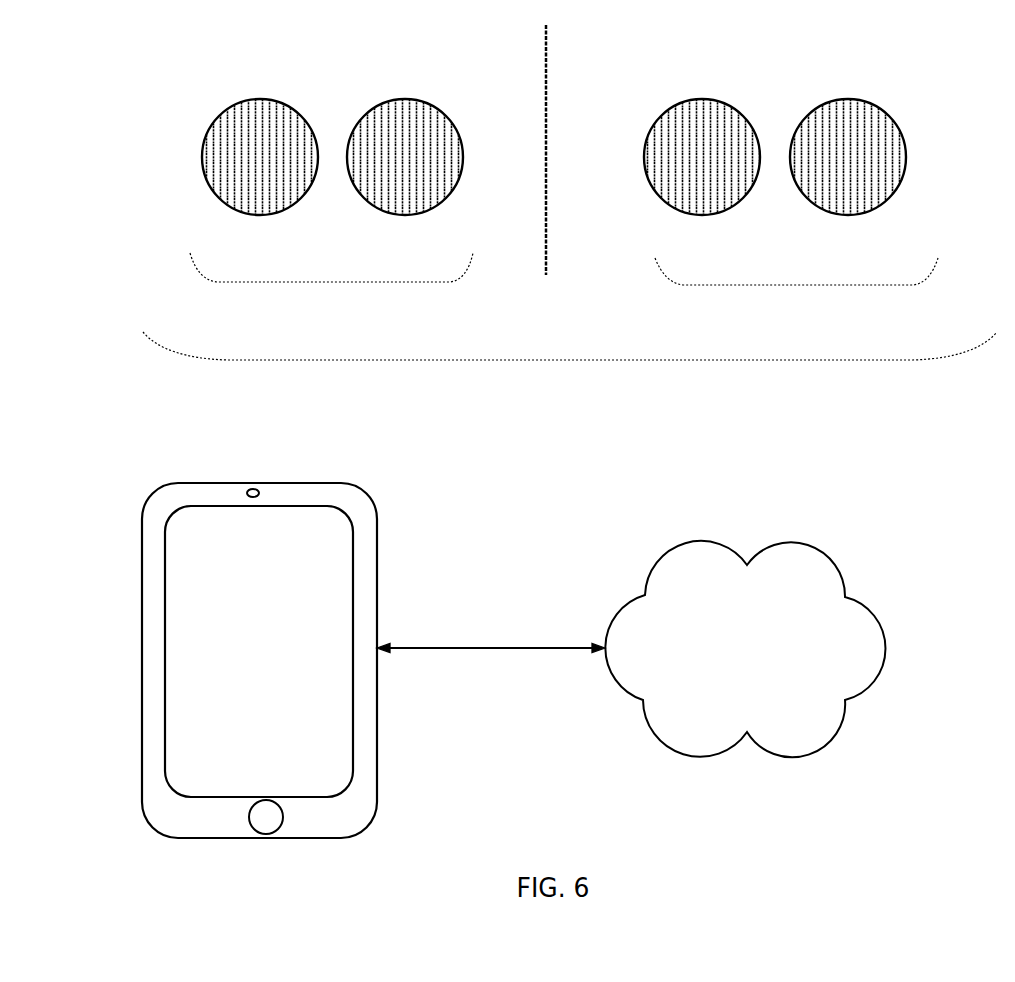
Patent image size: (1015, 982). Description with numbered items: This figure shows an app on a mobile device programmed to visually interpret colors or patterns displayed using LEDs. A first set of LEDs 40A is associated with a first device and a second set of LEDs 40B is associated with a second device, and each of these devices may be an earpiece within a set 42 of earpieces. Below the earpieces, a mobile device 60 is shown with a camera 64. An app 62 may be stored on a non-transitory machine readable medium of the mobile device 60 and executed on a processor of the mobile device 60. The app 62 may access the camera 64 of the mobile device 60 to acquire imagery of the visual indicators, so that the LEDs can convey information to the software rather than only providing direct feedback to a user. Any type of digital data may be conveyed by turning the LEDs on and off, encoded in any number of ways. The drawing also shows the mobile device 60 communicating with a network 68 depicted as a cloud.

The first set of LEDs 40A is at (325, 282).
The second set of LEDs 40B is at (790, 285).
The set of earpieces 42 is at (548, 360).
The mobile device 60 is at (377, 520).
The app 62 is at (335, 647).
The camera 64 is at (262, 490).
The network 68 is at (837, 568).